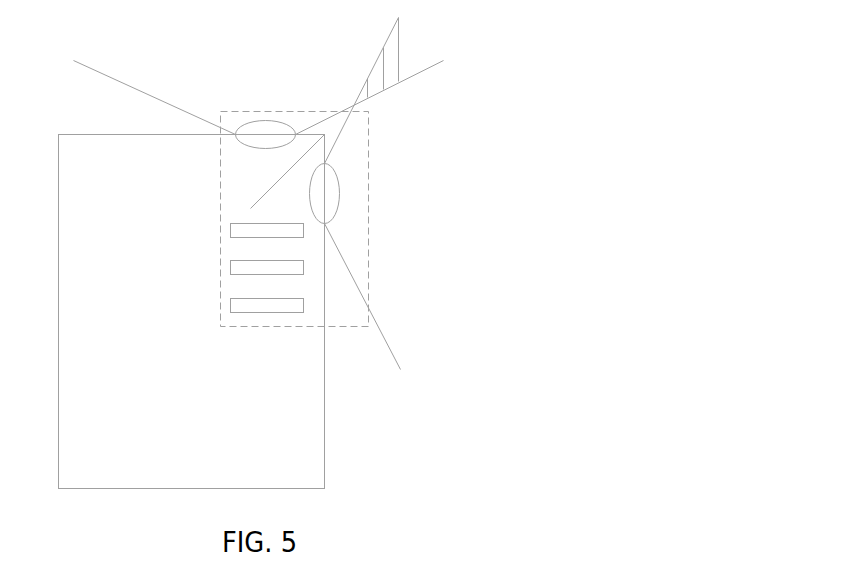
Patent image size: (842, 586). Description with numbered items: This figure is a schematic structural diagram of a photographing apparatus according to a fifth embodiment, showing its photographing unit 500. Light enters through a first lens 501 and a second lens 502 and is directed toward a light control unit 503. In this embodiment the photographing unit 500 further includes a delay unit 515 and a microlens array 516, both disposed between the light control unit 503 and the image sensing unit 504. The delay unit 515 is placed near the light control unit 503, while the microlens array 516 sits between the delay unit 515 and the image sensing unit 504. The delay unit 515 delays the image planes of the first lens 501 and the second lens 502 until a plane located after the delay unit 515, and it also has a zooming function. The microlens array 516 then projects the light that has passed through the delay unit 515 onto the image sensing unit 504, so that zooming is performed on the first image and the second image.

The photographing unit 500 is at (238, 326).
The first lens 501 is at (260, 128).
The second lens 502 is at (336, 216).
The light control unit 503 is at (262, 188).
The image sensing unit 504 is at (234, 306).
The delay unit 515 is at (234, 232).
The microlens array 516 is at (234, 268).